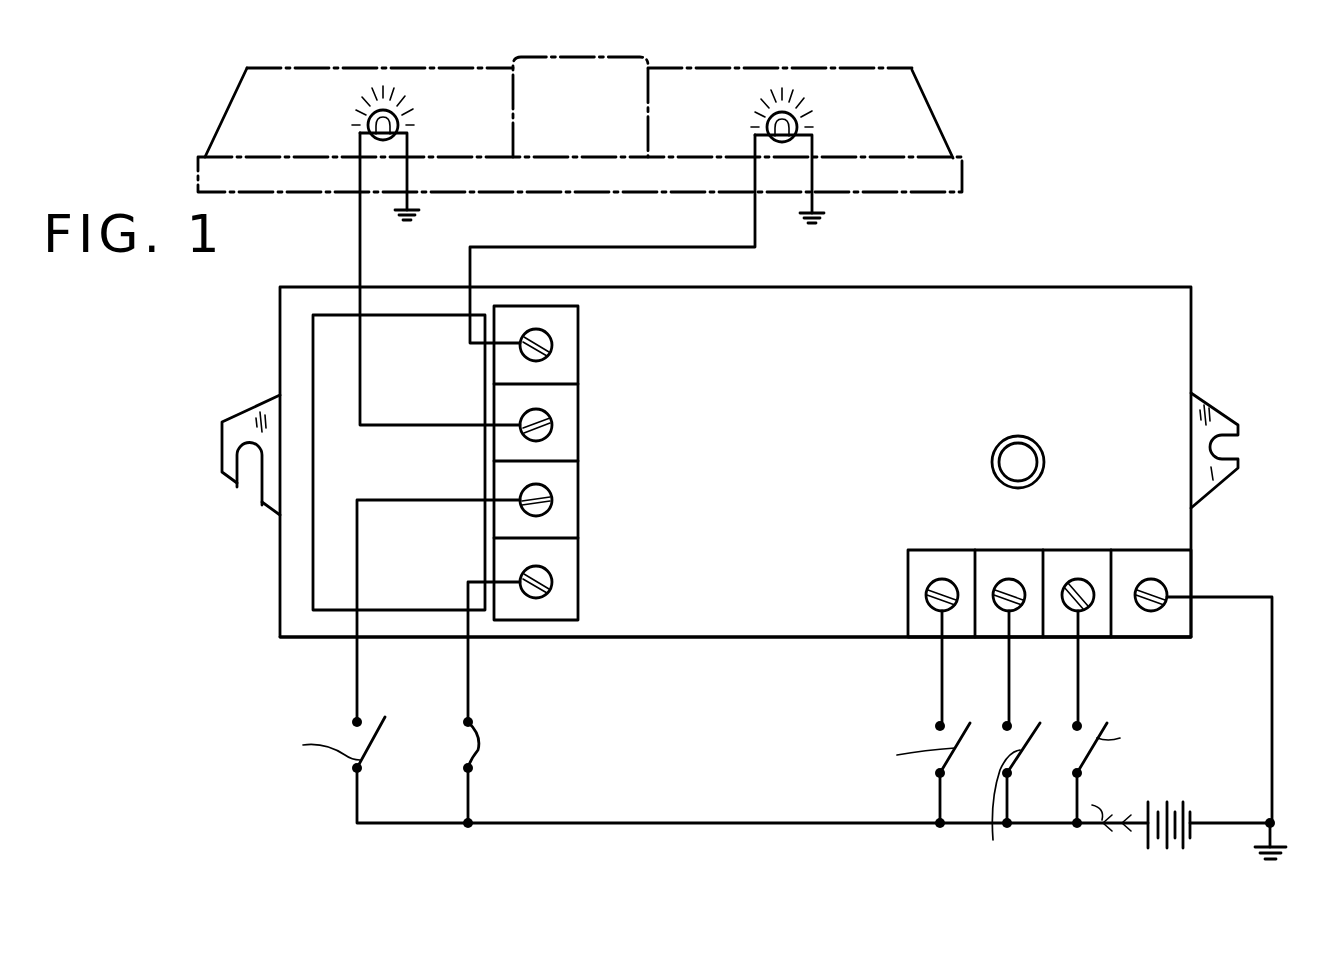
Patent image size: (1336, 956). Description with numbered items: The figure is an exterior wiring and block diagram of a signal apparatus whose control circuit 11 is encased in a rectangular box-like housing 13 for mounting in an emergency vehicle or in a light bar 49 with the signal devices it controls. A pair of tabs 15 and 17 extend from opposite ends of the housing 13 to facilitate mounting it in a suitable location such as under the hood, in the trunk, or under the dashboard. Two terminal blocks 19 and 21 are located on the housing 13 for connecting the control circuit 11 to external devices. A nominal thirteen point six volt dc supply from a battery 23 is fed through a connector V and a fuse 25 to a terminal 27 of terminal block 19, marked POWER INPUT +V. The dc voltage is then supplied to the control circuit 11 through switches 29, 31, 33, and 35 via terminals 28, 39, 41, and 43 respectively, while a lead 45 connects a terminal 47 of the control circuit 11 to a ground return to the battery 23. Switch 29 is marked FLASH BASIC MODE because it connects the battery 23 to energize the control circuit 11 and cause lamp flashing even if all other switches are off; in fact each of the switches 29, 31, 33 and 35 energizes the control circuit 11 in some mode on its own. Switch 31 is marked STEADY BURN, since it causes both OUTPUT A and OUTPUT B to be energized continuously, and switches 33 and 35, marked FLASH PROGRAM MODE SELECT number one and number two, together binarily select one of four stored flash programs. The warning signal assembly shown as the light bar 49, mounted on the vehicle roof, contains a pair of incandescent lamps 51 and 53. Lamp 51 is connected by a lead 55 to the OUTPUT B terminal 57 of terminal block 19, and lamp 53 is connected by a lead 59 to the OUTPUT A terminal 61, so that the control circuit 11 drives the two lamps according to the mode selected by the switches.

The control circuit 11 is at (948, 322).
The housing 13 is at (770, 637).
The tab 15 is at (240, 415).
The tab 17 is at (1225, 425).
The terminal block 19 is at (550, 505).
The terminal block 21 is at (1061, 612).
The battery 23 is at (1148, 838).
The fuse 25 is at (475, 755).
The terminal 27 is at (552, 590).
The terminal 28 is at (552, 496).
The switch 29 is at (370, 742).
The switch 31 is at (955, 755).
The switch 33 is at (1028, 755).
The switch 35 is at (1098, 750).
The terminal 39 is at (928, 585).
The terminal 41 is at (1000, 580).
The terminal 43 is at (1078, 580).
The lead 45 is at (1225, 597).
The terminal 47 is at (1158, 612).
The light bar 49 is at (470, 70).
The incandescent lamp 51 is at (408, 128).
The incandescent lamp 53 is at (812, 130).
The lead 55 is at (360, 145).
The OUTPUT B terminal 57 is at (552, 420).
The lead 59 is at (755, 150).
The OUTPUT A terminal 61 is at (552, 338).